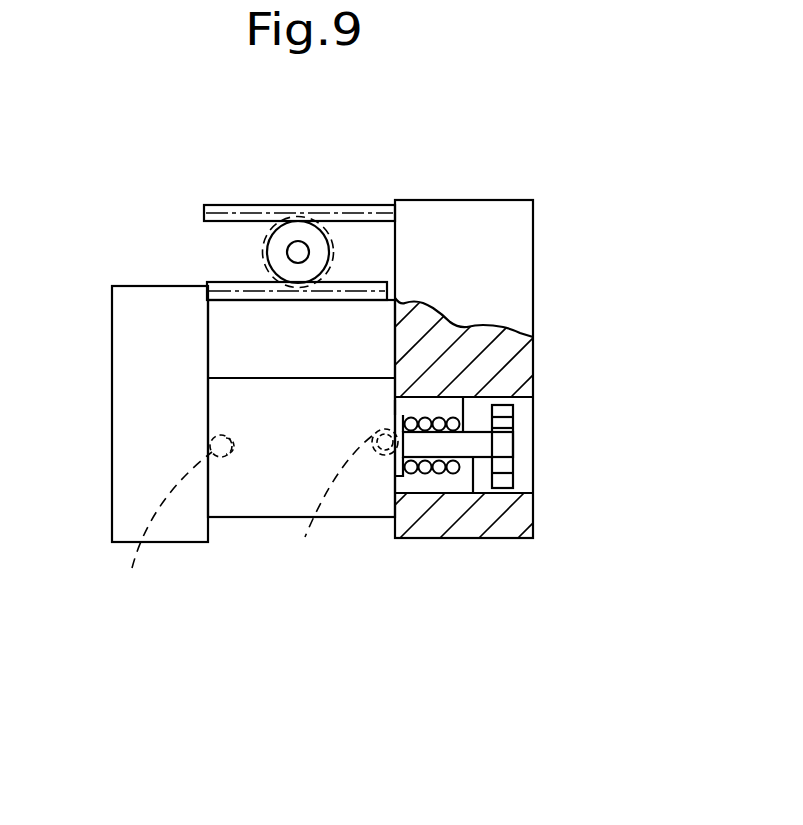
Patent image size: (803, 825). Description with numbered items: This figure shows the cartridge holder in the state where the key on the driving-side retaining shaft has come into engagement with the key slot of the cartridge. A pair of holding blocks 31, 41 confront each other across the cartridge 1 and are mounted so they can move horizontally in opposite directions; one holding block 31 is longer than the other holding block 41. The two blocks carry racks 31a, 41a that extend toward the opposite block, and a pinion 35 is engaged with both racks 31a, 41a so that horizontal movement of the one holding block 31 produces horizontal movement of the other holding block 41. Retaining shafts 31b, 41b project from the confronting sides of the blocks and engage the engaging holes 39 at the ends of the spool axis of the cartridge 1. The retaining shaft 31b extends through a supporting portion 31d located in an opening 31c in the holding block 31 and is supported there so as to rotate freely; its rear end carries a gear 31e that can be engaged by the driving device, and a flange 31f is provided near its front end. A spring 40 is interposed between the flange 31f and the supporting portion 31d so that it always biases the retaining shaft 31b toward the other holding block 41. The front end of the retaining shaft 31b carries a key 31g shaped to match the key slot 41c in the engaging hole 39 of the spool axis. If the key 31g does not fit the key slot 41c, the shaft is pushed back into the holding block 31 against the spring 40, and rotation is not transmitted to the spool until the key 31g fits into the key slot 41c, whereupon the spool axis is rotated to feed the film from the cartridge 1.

The cartridge 1 is at (283, 507).
The holding block 31 is at (520, 268).
The rack 31a is at (327, 208).
The retaining shaft 31b is at (395, 540).
The opening 31c is at (452, 408).
The supporting portion 31d is at (468, 480).
The gear 31e is at (502, 467).
The flange 31f is at (396, 492).
The key 31g is at (392, 415).
The pinion 35 is at (268, 250).
The engaging hole 39 is at (230, 460).
The spring 40 is at (421, 416).
The holding block 41 is at (113, 385).
The rack 41a is at (273, 298).
The retaining shaft 41b is at (157, 531).
The key slot 41c is at (332, 504).